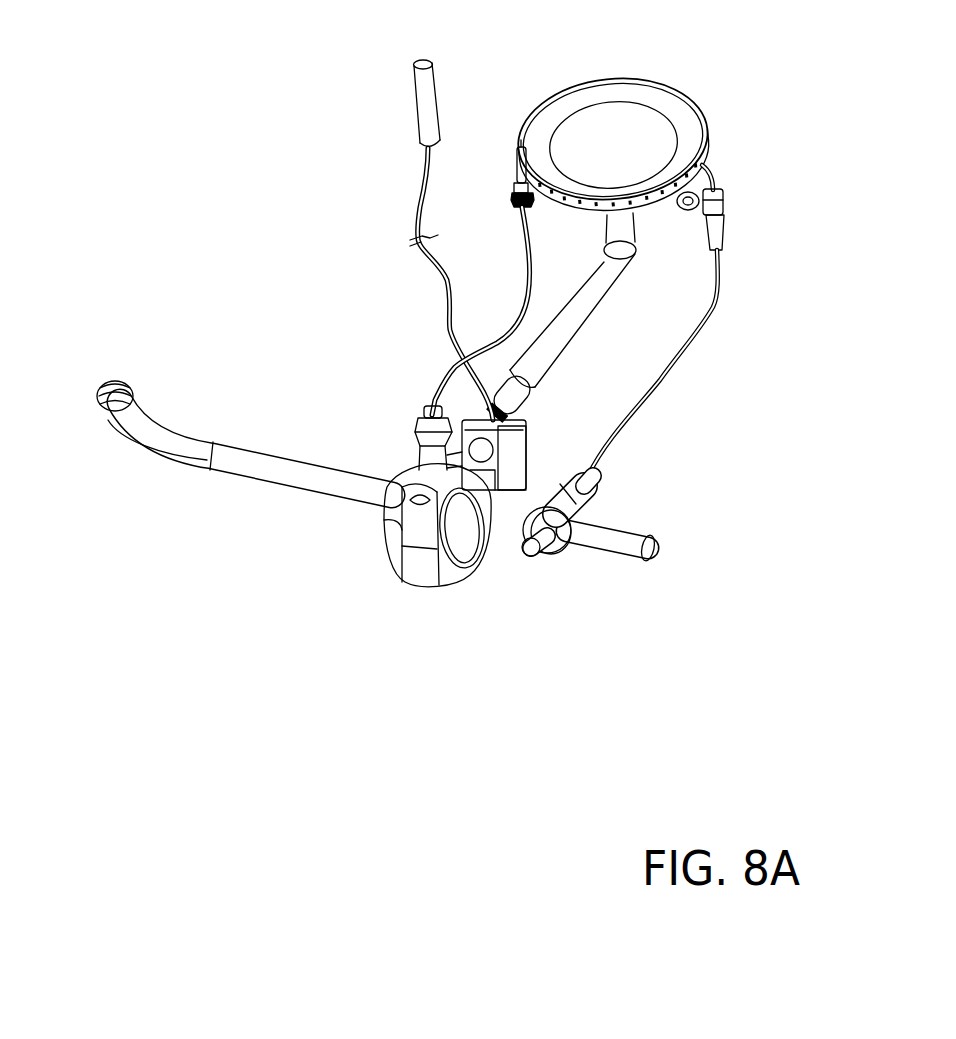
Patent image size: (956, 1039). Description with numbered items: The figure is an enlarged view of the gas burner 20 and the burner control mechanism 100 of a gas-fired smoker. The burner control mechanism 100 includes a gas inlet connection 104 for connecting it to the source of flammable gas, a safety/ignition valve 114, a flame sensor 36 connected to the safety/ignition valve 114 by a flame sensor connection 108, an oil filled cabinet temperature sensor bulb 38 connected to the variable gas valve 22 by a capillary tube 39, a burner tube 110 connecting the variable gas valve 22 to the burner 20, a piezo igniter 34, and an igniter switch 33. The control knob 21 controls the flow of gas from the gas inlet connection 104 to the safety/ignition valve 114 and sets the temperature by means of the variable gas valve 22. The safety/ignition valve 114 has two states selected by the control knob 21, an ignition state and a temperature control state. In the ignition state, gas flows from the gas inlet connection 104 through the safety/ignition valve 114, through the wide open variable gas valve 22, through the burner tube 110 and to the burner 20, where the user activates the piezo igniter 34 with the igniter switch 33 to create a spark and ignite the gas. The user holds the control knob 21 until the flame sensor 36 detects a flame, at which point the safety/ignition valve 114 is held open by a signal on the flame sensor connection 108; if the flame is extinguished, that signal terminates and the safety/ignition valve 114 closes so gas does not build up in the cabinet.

The gas burner 20 is at (665, 87).
The control knob 21 is at (385, 523).
The variable gas valve 22 is at (535, 441).
The igniter switch 33 is at (590, 500).
The piezo igniter 34 is at (723, 230).
The flame sensor 36 is at (517, 170).
The cabinet temperature sensor bulb 38 is at (405, 103).
The capillary tube 39 is at (420, 202).
The burner control mechanism 100 is at (500, 580).
The gas inlet connection 104 is at (102, 383).
The flame sensor connection 108 is at (437, 380).
The burner tube 110 is at (560, 341).
The safety/ignition valve 114 is at (452, 462).